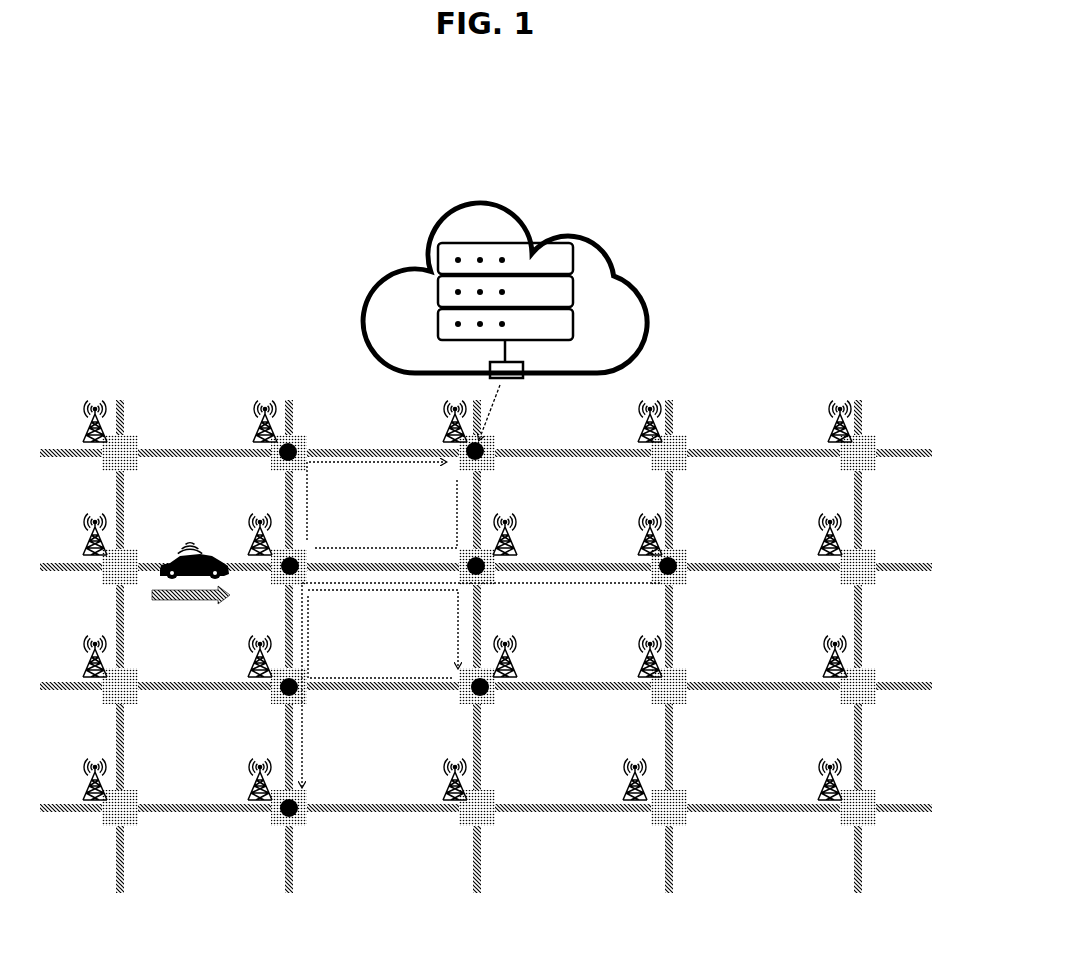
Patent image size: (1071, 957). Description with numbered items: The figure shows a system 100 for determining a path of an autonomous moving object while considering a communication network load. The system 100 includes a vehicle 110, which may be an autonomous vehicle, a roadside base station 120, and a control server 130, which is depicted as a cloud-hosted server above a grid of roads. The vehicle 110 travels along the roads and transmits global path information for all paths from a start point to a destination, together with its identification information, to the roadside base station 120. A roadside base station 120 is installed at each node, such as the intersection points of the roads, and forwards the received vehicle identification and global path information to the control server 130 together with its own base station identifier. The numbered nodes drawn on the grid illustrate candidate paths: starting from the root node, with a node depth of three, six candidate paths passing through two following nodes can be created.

The system for determining a path 100 is at (482, 136).
The vehicle 110 is at (176, 562).
The roadside base station 120 is at (83, 640).
The control server 130 is at (445, 243).